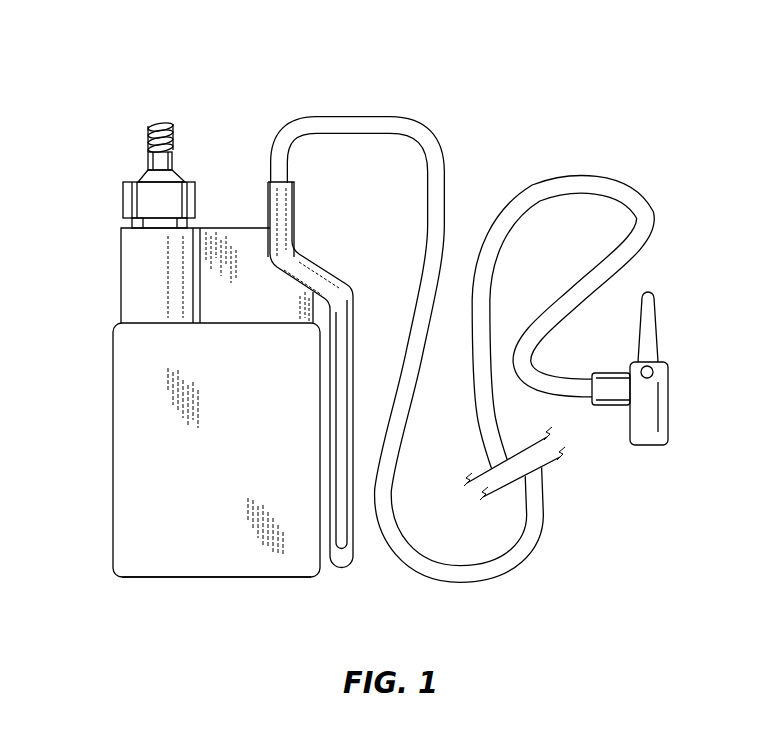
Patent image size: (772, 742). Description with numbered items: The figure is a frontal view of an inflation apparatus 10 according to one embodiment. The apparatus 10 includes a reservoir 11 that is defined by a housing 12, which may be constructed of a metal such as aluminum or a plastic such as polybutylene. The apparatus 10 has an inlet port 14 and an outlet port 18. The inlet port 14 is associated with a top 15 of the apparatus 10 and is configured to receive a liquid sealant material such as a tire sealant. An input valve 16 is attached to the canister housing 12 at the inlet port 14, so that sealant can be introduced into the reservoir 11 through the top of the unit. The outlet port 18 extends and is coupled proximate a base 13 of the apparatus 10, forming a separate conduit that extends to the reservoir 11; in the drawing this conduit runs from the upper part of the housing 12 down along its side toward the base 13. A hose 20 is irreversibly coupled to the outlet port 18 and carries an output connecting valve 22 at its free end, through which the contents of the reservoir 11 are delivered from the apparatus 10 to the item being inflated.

The inflation apparatus 10 is at (358, 334).
The reservoir 11 is at (165, 388).
The housing 12 is at (128, 518).
The base 13 is at (198, 578).
The inlet port 14 is at (122, 196).
The top 15 is at (236, 213).
The input valve 16 is at (178, 137).
The outlet port 18 is at (293, 236).
The hose 20 is at (598, 178).
The output connecting valve 22 is at (668, 403).